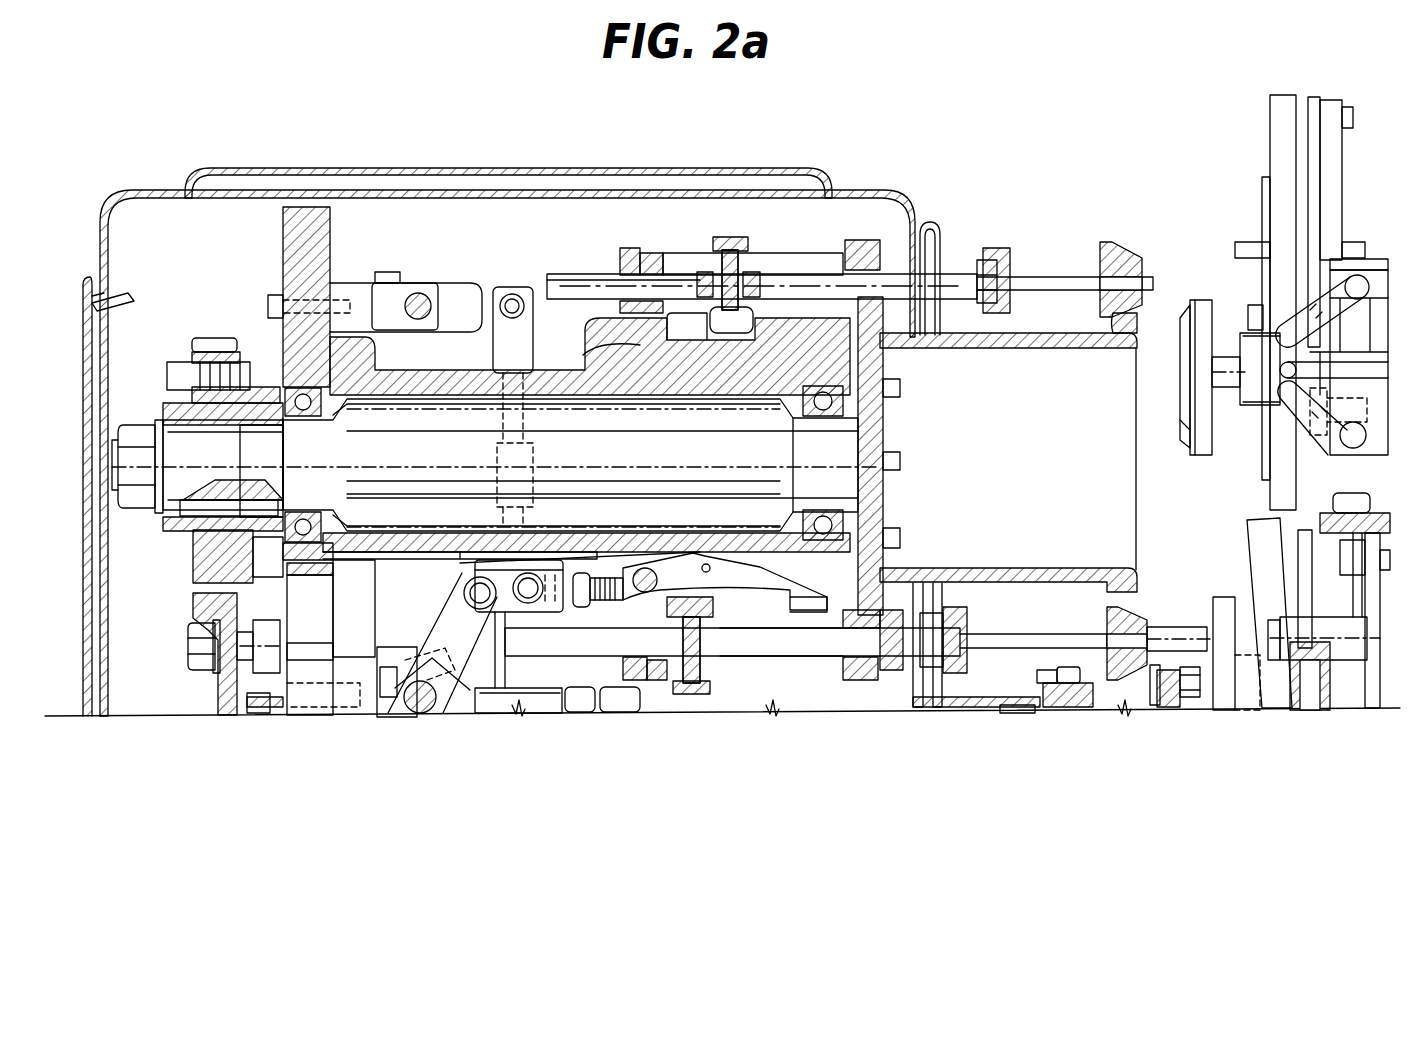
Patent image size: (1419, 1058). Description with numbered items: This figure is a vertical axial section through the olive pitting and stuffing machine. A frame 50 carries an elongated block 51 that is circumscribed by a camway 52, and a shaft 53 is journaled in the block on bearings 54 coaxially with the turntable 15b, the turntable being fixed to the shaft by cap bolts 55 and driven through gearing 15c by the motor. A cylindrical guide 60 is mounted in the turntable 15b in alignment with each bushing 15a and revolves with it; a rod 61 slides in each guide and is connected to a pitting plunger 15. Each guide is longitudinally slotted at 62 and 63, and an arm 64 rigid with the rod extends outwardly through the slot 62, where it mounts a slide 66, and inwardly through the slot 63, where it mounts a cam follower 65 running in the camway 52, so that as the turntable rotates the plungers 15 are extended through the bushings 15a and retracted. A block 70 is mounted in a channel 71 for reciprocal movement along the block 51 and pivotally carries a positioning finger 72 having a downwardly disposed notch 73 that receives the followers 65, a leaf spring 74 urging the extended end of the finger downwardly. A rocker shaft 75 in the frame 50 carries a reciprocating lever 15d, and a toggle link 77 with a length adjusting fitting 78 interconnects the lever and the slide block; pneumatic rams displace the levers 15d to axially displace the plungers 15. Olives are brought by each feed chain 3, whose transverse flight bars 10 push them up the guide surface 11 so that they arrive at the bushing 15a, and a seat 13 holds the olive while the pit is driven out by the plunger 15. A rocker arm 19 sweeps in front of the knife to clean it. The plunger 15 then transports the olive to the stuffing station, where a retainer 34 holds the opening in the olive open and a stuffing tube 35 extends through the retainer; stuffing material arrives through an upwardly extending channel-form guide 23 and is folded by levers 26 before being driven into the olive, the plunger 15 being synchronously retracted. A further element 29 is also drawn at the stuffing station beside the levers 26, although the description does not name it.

The feed chain 3 is at (1175, 708).
The transverse flight bar 10 is at (1185, 627).
The guide surface 11 is at (1195, 700).
The seat 13 is at (1218, 610).
The pitting plunger 15 is at (1073, 280).
The bushing 15a is at (1118, 258).
The turntable 15b is at (885, 428).
The gearing 15c is at (205, 338).
The reciprocating lever 15d is at (476, 650).
The rocker arm 19 is at (1306, 530).
The guide 23 is at (1300, 138).
The lever 26 is at (1375, 430).
The lever 29 is at (1285, 395).
The retainer 34 is at (1188, 305).
The stuffing tube 35 is at (1228, 387).
The frame 50 is at (332, 248).
The elongated block 51 is at (455, 350).
The camway 52 is at (660, 328).
The shaft 53 is at (662, 498).
The bearing 54 is at (322, 522).
The cap bolt 55 is at (902, 388).
The cylindrical guide 60 is at (652, 250).
The rod 61 is at (812, 275).
The slot 62 is at (668, 255).
The slot 63 is at (660, 318).
The arm 64 is at (733, 248).
The cam follower 65 is at (595, 350).
The slide 66 is at (748, 243).
The block 70 is at (615, 615).
The channel 71 is at (462, 565).
The positioning finger 72 is at (778, 596).
The notch 73 is at (788, 600).
The leaf spring 74 is at (660, 572).
The rocker shaft 75 is at (425, 713).
The toggle link 77 is at (500, 612).
The length adjusting fitting 78 is at (580, 600).